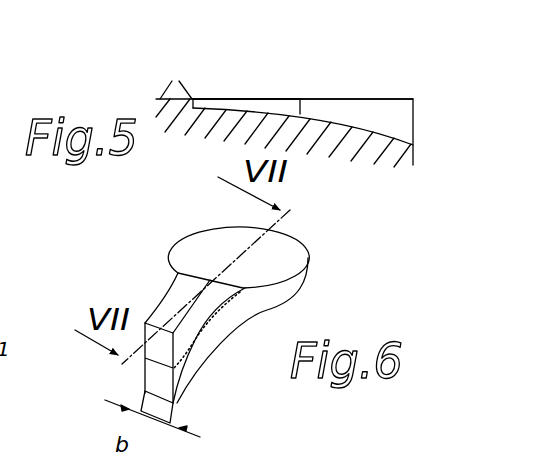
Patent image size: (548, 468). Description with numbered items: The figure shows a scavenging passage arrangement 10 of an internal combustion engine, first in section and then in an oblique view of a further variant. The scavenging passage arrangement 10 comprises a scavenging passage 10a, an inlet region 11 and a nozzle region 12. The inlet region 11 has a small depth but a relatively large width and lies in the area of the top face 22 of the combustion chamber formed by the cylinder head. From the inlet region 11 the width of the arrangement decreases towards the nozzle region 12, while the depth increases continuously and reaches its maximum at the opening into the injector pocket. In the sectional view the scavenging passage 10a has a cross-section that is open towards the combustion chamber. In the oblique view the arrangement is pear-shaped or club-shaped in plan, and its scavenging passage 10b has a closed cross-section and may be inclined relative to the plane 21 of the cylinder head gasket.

In FIG. 5, the scavenging passage arrangement 10 is at (336, 92).
In FIG. 6, the scavenging passage arrangement 10 is at (227, 321).
In FIG. 5, the scavenging passage 10a is at (397, 113).
In FIG. 6, the scavenging passage 10b is at (160, 396).
In FIG. 5, the inlet region 11 is at (225, 100).
In FIG. 6, the inlet region 11 is at (293, 253).
In FIG. 5, the nozzle region 12 is at (410, 128).
In FIG. 6, the nozzle region 12 is at (177, 388).
In FIG. 5, the plane of the cylinder head gasket 21 is at (160, 99).
In FIG. 5, the top face 22 is at (193, 99).